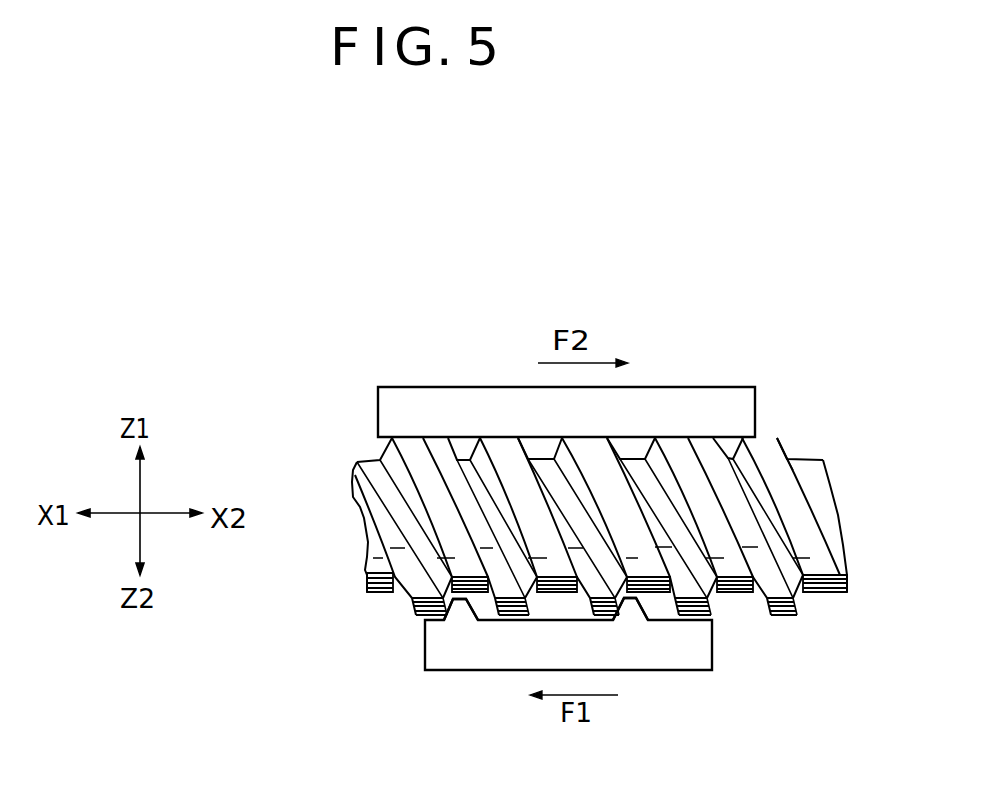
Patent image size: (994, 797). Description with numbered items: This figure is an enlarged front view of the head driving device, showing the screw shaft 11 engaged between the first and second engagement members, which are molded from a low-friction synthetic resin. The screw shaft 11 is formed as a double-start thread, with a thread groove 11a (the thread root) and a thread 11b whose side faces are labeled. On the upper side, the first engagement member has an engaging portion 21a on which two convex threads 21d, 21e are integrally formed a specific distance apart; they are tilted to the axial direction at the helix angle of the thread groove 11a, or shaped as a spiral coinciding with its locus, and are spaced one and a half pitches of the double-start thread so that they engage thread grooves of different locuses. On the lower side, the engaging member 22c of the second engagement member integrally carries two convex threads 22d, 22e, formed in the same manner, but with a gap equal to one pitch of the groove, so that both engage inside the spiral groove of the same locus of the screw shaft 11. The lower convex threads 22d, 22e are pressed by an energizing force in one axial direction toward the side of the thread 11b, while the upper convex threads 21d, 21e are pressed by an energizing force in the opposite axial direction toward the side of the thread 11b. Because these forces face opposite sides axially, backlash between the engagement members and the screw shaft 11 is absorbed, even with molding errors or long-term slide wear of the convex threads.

The screw shaft 11 is at (580, 543).
The thread groove 11a is at (738, 597).
The thread 11b is at (812, 497).
The engaging portion 21a is at (400, 400).
The convex thread 21e is at (465, 453).
The convex thread 21d is at (730, 450).
The engaging member 22c is at (478, 657).
The convex thread 22e is at (457, 610).
The convex thread 22d is at (632, 608).